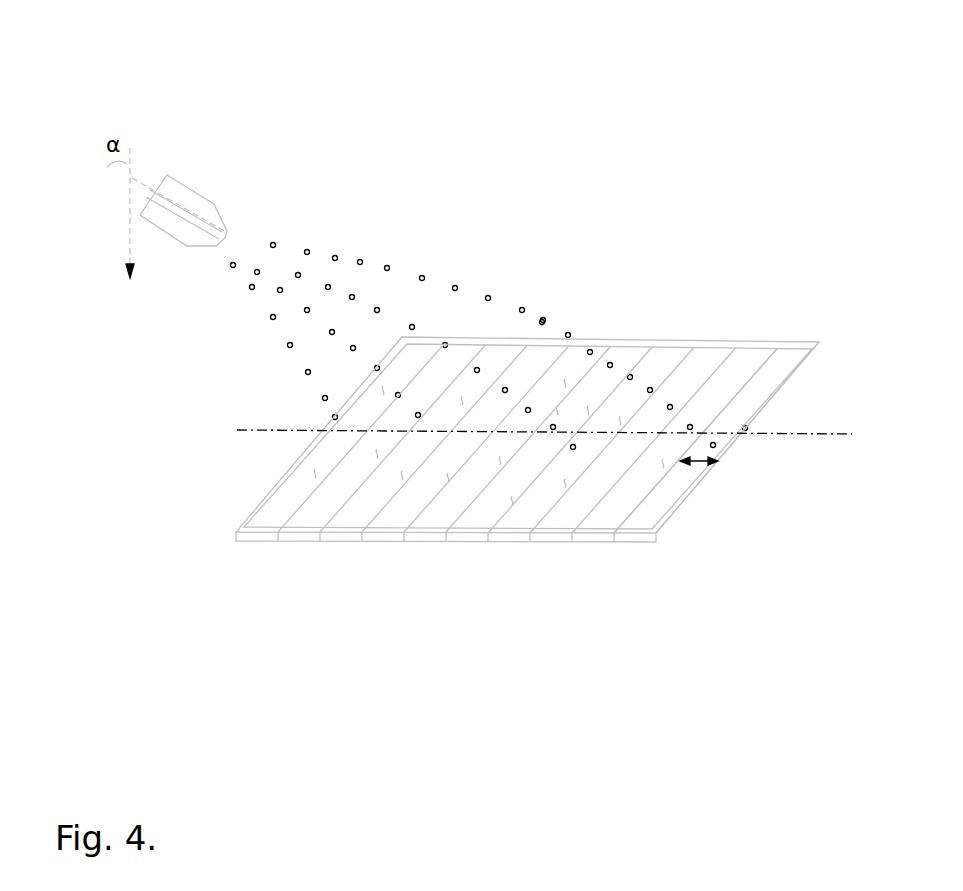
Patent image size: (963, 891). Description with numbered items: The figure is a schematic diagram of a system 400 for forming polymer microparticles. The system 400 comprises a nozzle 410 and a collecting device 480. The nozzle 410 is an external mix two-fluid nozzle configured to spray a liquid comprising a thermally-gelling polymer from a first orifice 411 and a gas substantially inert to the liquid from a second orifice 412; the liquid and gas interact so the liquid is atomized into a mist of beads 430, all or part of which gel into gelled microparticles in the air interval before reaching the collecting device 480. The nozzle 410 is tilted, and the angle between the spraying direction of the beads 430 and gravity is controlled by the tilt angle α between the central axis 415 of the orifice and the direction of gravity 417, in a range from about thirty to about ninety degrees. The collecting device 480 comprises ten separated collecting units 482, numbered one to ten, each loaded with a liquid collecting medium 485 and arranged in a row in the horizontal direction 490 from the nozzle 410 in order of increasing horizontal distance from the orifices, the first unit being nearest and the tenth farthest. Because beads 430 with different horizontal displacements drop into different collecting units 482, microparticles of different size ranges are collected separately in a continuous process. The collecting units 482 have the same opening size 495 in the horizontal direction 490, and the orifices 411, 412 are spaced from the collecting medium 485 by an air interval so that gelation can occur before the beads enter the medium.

The system 400 is at (150, 44).
The nozzle 410 is at (198, 197).
The first orifice 411 is at (234, 239).
The second orifice 412 is at (218, 258).
The central axis 415 is at (120, 170).
The direction of gravity 417 is at (128, 236).
The beads 430 is at (455, 287).
The collecting device 480 is at (628, 340).
The collecting units 482 is at (753, 355).
The liquid collecting medium 485 is at (755, 401).
The horizontal direction 490 is at (783, 435).
The opening size 495 is at (703, 462).